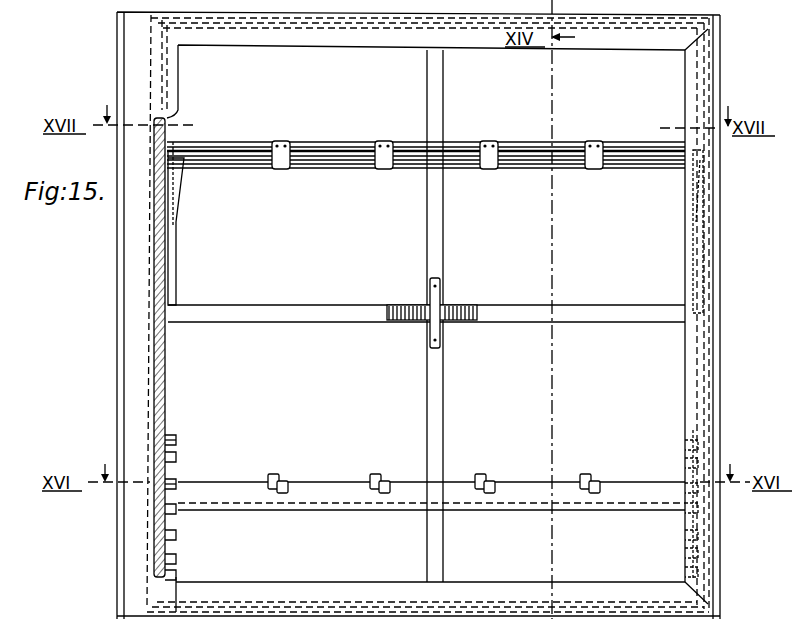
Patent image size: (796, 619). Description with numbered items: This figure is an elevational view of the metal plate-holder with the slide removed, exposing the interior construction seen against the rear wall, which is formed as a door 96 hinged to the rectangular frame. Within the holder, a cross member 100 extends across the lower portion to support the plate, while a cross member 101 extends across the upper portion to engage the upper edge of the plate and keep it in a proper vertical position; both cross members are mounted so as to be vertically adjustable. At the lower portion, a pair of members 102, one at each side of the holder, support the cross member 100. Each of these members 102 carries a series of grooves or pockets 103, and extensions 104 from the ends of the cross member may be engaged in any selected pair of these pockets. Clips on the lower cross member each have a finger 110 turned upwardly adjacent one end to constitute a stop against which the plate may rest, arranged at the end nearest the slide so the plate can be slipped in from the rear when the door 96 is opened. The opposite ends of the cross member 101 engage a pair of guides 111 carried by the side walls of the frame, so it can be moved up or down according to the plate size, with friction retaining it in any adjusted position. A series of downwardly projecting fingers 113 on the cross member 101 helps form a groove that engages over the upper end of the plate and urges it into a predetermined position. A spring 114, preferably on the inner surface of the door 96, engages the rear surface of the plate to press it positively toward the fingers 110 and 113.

The door 96 is at (437, 320).
The cross member 100 is at (625, 500).
The cross member 101 is at (632, 149).
The members 102 is at (180, 418).
The grooves or pockets 103 is at (178, 448).
The extensions 104 is at (178, 482).
The finger 110 is at (280, 477).
The guides 111 is at (170, 257).
The fingers 113 is at (362, 150).
The spring 114 is at (466, 311).